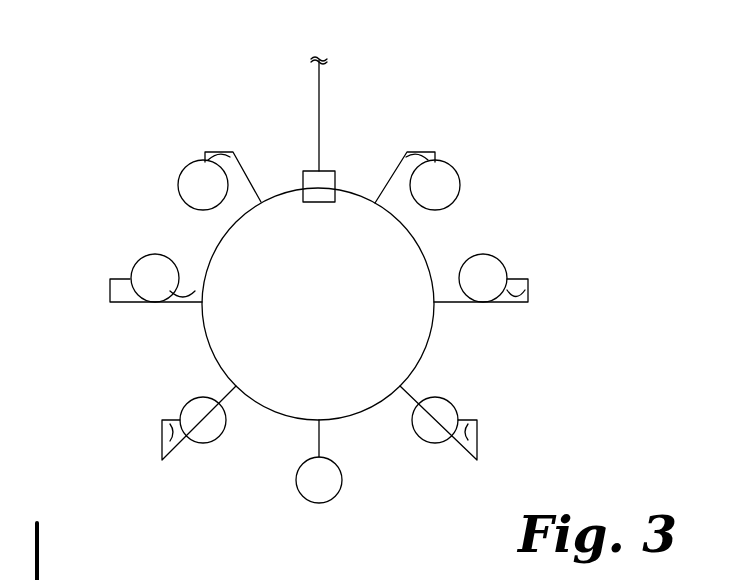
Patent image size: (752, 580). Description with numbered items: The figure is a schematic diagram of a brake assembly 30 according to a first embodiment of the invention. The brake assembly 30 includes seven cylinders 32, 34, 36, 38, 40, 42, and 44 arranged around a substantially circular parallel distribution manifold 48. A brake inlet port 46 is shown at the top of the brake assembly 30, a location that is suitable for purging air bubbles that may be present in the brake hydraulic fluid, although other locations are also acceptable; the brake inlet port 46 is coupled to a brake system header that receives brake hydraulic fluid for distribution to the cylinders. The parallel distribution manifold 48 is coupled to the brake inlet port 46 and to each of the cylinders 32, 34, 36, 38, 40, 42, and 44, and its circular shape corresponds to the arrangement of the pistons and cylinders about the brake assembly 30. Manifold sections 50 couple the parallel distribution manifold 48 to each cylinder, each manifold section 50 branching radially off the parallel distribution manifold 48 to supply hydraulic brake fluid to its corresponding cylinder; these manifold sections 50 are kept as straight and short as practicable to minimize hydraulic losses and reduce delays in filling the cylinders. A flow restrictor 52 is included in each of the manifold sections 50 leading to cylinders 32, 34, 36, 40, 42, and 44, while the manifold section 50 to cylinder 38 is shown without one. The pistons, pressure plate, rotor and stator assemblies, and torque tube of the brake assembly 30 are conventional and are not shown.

The brake assembly 30 is at (502, 90).
The cylinder 32 is at (184, 169).
The cylinder 34 is at (140, 261).
The cylinder 36 is at (186, 405).
The cylinder 38 is at (300, 494).
The cylinder 40 is at (457, 407).
The cylinder 42 is at (500, 260).
The cylinder 44 is at (459, 175).
The brake inlet port 46 is at (336, 176).
The parallel distribution manifold 48 is at (423, 246).
The manifold section 50 is at (243, 168).
The flow restrictor 52 is at (226, 140).